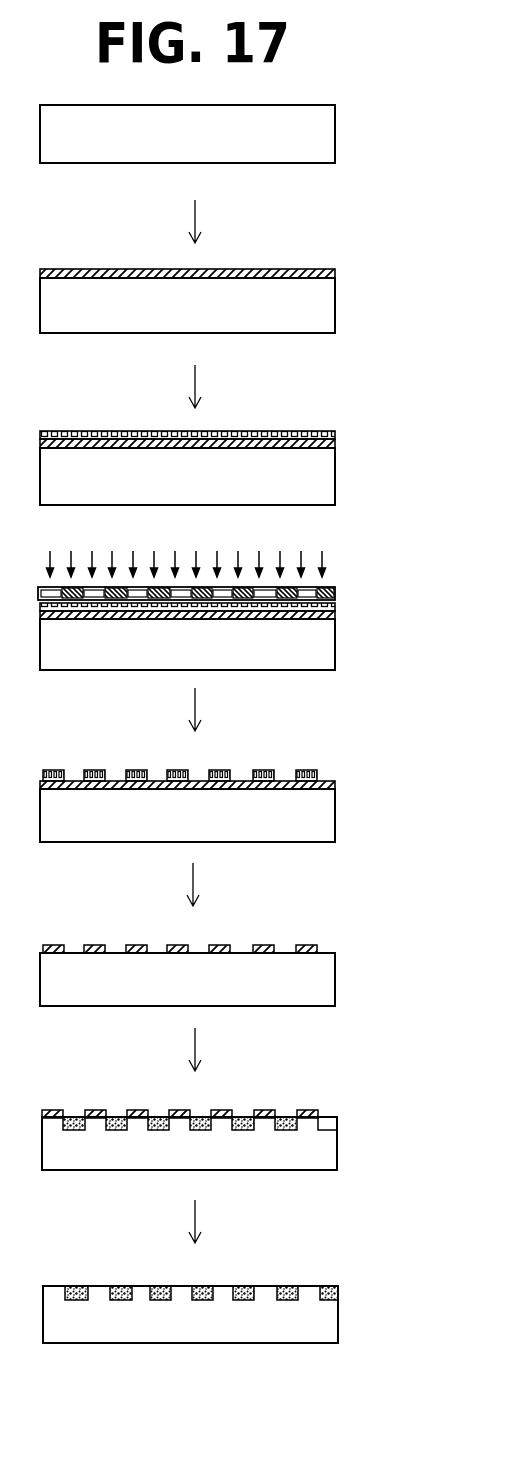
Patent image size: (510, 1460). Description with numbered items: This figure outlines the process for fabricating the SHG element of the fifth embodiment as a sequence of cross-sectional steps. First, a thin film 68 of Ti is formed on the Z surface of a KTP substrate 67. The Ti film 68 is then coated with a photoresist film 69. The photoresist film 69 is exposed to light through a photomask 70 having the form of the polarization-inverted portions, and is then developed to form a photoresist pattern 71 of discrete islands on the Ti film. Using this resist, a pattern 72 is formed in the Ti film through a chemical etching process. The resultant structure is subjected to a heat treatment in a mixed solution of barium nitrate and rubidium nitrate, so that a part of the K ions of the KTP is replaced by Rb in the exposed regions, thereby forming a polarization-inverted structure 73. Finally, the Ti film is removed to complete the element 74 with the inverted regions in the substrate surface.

The KTP substrate 67 is at (322, 138).
The thin film of Ti 68 is at (327, 269).
The photoresist film 69 is at (328, 431).
The photomask 70 is at (330, 587).
The photoresist pattern 71 is at (320, 770).
The pattern on the Ti film 72 is at (322, 947).
The polarization-inverted structure 73 is at (330, 1122).
The element 74 is at (325, 1322).